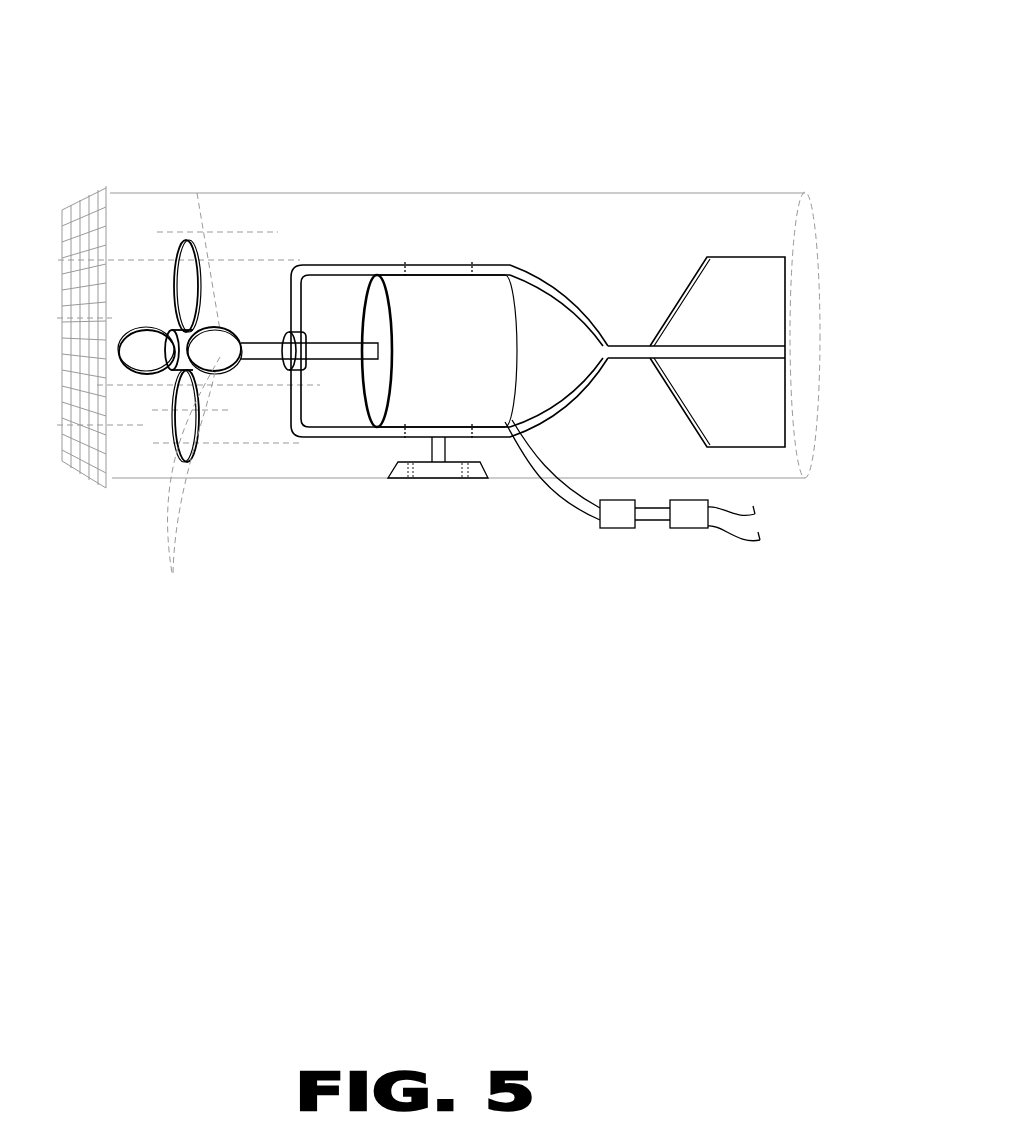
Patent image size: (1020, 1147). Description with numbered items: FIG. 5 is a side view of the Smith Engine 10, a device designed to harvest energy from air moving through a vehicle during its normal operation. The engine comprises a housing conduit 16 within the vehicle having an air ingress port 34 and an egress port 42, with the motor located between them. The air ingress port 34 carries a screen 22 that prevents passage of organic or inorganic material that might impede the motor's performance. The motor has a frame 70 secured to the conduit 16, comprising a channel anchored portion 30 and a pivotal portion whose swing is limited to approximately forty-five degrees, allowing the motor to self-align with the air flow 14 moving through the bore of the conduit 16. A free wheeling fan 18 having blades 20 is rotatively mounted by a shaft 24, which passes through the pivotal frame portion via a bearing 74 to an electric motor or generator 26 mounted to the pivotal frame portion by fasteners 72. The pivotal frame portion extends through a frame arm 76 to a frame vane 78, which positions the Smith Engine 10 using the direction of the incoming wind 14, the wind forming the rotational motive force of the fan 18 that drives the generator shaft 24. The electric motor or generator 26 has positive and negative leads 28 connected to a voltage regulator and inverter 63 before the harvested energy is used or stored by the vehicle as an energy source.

The Smith Engine 10 is at (735, 47).
The air flow 14 is at (172, 232).
The housing conduit 16 is at (540, 193).
The free wheeling fan 18 is at (176, 350).
The blades 20 is at (192, 484).
The screen 22 is at (79, 205).
The shaft 24 is at (333, 352).
The electric motor or generator 26 is at (473, 365).
The positive and negative leads 28 is at (548, 465).
The channel anchored portion 30 is at (413, 478).
The air ingress port 34 is at (122, 447).
The egress port 42 is at (803, 478).
The voltage regulator and inverter 63 is at (687, 500).
The frame 70 is at (330, 272).
The fasteners 72 is at (472, 267).
The bearing 74 is at (283, 363).
The frame arm 76 is at (630, 347).
The frame vane 78 is at (725, 265).